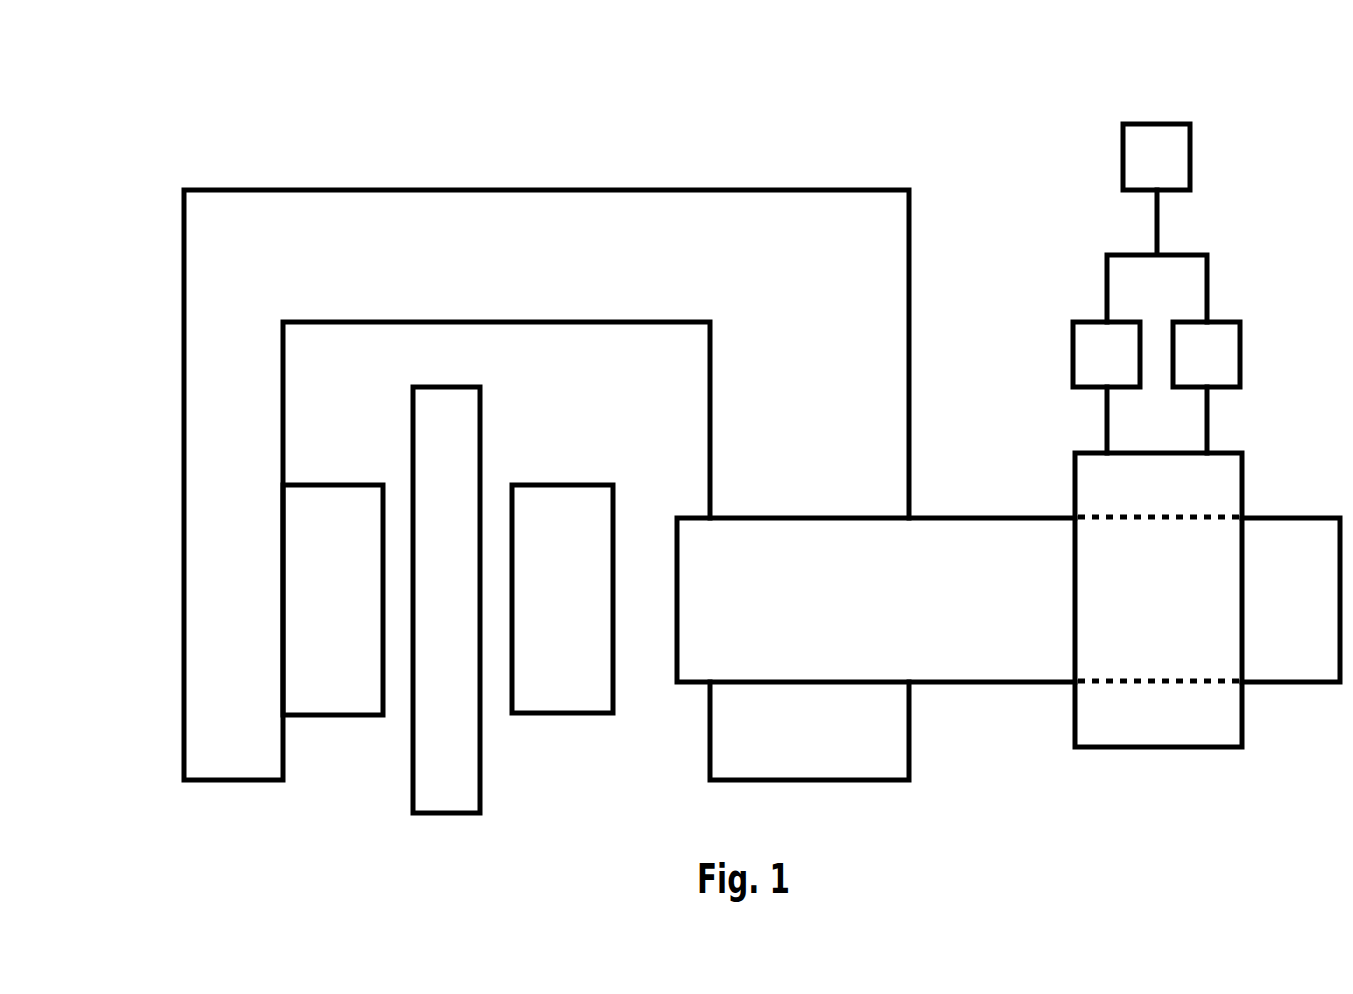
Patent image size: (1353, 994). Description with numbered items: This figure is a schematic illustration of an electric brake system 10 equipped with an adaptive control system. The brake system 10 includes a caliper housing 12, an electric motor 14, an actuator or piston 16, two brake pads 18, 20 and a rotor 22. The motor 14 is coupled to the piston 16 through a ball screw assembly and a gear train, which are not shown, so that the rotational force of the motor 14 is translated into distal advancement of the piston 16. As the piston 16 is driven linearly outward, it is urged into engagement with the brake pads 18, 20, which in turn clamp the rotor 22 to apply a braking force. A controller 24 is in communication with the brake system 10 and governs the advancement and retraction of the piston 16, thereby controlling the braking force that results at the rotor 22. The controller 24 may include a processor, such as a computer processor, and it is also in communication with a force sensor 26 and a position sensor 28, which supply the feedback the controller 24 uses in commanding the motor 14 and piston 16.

The electric brake system 10 is at (146, 82).
The caliper housing 12 is at (538, 189).
The electric motor 14 is at (1243, 490).
The piston 16 is at (993, 515).
The brake pad 18 is at (332, 716).
The brake pad 20 is at (563, 715).
The rotor 22 is at (481, 405).
The controller 24 is at (1190, 160).
The force sensor 26 is at (1072, 358).
The position sensor 28 is at (1242, 358).